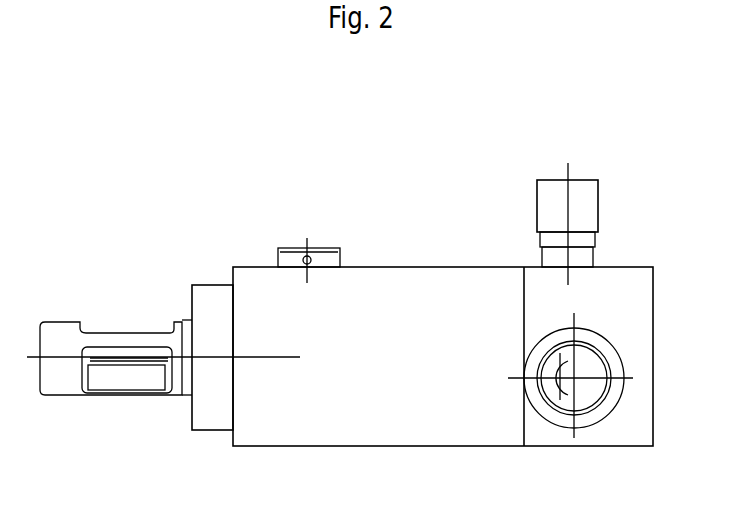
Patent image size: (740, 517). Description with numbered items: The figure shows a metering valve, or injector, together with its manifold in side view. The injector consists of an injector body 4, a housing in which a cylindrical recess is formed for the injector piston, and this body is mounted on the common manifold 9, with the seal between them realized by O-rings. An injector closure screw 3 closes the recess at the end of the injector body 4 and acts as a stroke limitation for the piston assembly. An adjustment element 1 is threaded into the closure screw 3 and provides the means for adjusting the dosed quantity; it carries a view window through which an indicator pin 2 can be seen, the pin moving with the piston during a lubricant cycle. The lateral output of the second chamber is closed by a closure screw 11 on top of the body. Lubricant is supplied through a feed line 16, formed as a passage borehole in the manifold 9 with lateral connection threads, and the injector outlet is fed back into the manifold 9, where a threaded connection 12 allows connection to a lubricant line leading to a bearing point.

The adjustment element 1 is at (108, 243).
The indicator pin 2 is at (125, 242).
The injector closure screw 3 is at (178, 261).
The injector body 4 is at (432, 280).
The manifold 9 is at (620, 280).
The closure screw 11 is at (288, 247).
The threaded connection 12 is at (550, 208).
The feed line 16 is at (585, 387).